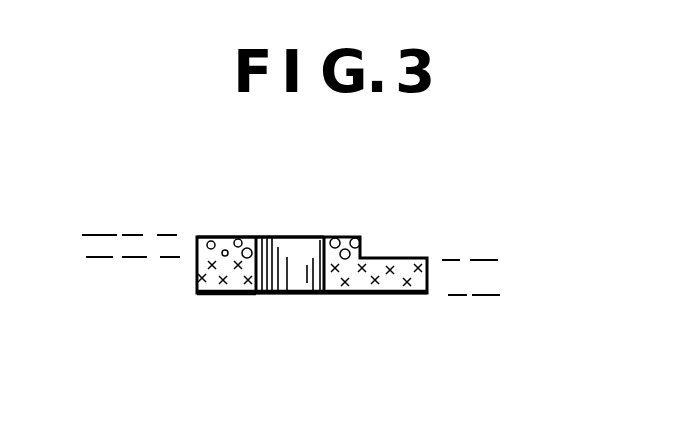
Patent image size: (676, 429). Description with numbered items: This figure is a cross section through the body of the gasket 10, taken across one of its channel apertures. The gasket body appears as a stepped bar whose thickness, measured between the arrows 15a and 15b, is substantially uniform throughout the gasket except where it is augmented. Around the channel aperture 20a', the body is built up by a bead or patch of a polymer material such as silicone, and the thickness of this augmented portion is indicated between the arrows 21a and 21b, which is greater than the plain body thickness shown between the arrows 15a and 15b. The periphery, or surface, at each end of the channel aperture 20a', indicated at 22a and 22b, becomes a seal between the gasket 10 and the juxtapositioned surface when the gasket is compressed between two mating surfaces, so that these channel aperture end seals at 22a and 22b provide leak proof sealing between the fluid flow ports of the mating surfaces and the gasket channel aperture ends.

The gasket 10 is at (393, 248).
The gasket body thickness arrow 15a is at (488, 259).
The gasket body thickness arrow 15b is at (488, 296).
The channel aperture 20a' is at (310, 220).
The silicone patch thickness arrow 21a is at (96, 233).
The silicone patch thickness arrow 21b is at (96, 258).
The channel aperture end surface 22a is at (247, 230).
The channel aperture end surface 22b is at (236, 294).